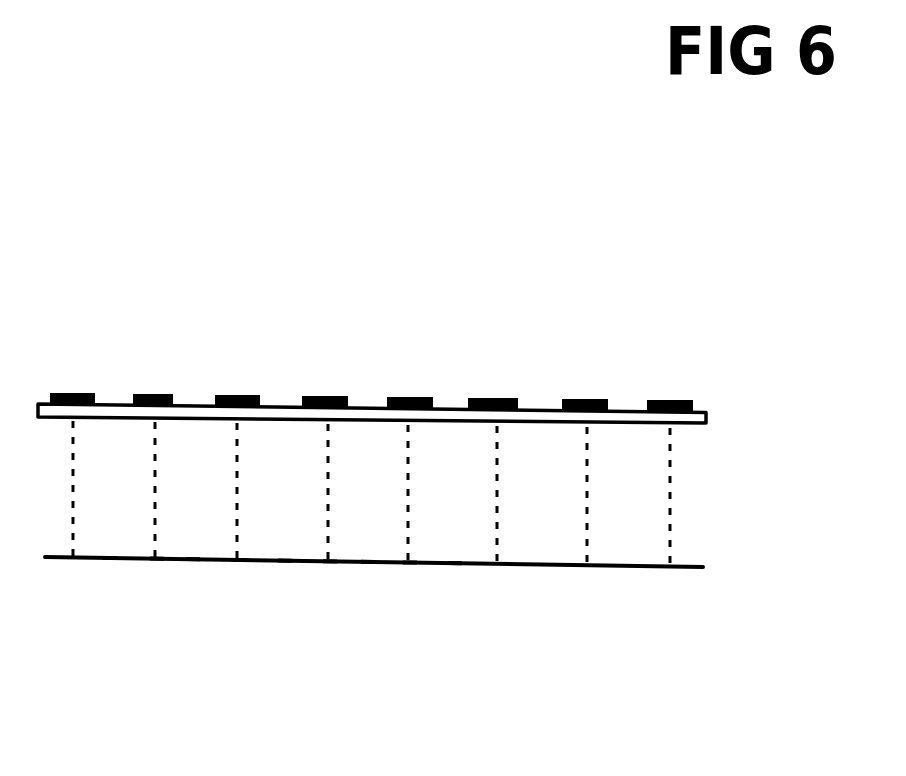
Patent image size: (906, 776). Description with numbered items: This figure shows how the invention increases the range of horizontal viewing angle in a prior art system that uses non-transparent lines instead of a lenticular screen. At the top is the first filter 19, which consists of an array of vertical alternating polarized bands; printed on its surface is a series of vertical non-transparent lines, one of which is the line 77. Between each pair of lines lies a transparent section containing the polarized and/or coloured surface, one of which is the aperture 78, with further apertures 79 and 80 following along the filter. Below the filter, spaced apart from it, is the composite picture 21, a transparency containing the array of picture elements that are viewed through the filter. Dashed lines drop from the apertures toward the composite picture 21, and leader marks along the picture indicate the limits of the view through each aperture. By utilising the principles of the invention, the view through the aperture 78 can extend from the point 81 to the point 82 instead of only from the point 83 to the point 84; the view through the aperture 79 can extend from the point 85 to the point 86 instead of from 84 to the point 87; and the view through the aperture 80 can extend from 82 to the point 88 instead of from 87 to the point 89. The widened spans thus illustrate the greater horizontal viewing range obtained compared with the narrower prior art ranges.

The first filter 19 is at (710, 415).
The composite picture 21 is at (703, 566).
The vertical non-transparent line 77 is at (63, 396).
The transparent section 78 is at (191, 400).
The aperture 79 is at (280, 400).
The aperture 80 is at (372, 400).
The view limit 81 is at (110, 562).
The view limit 82 is at (285, 566).
The view limit 83 is at (157, 560).
The view limit 84 is at (240, 561).
The view limit 85 is at (193, 563).
The view limit 86 is at (368, 567).
The view limit 87 is at (330, 564).
The view limit 88 is at (455, 567).
The view limit 89 is at (410, 565).